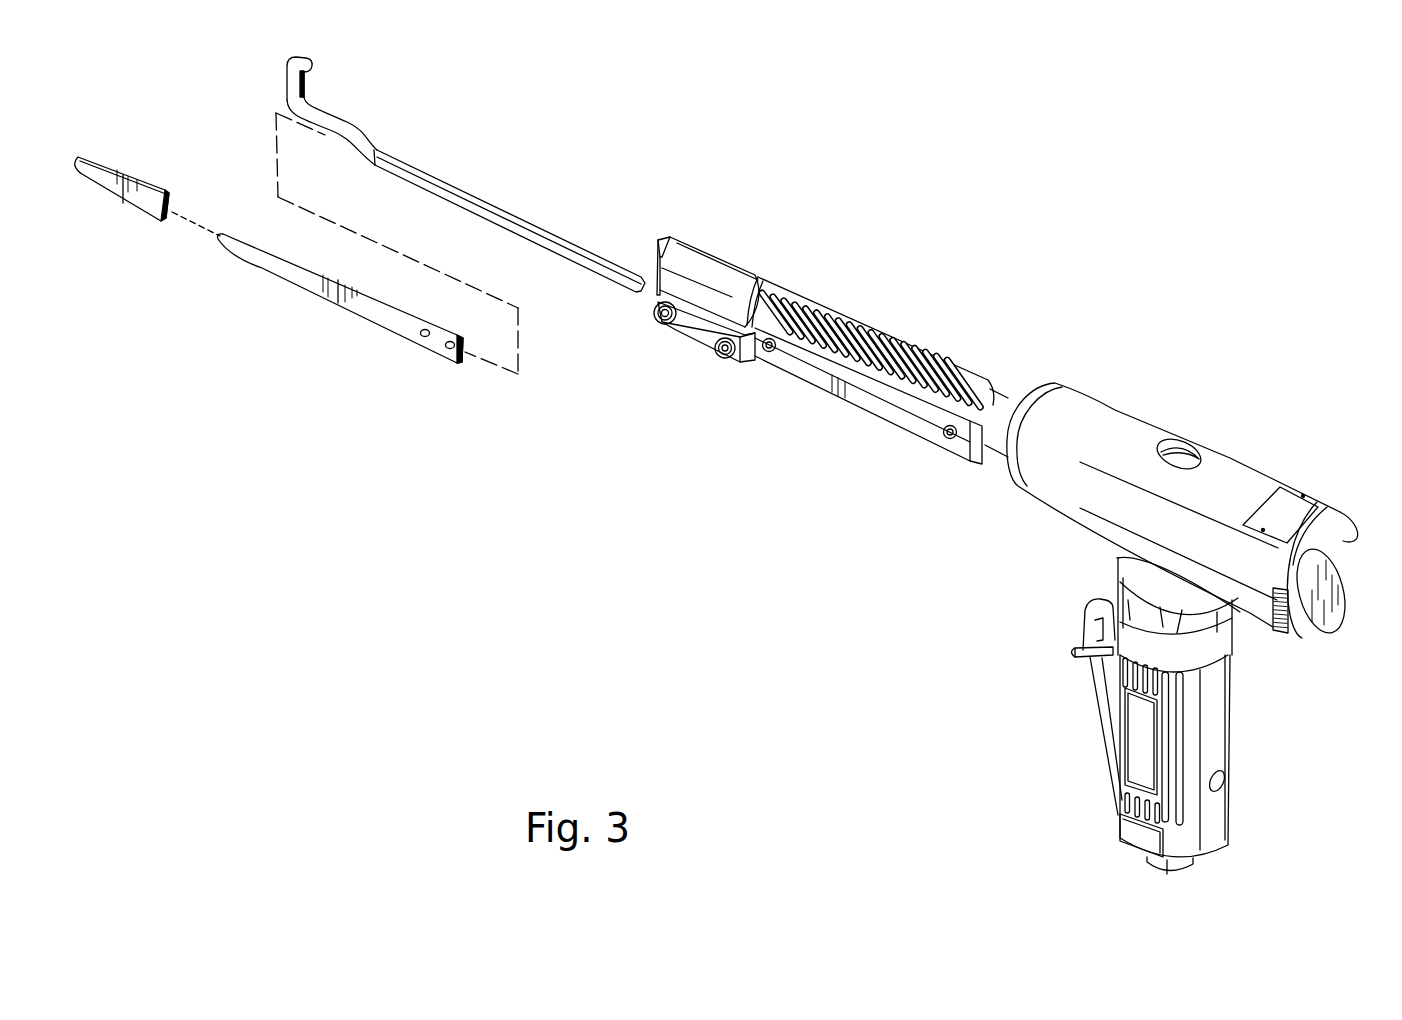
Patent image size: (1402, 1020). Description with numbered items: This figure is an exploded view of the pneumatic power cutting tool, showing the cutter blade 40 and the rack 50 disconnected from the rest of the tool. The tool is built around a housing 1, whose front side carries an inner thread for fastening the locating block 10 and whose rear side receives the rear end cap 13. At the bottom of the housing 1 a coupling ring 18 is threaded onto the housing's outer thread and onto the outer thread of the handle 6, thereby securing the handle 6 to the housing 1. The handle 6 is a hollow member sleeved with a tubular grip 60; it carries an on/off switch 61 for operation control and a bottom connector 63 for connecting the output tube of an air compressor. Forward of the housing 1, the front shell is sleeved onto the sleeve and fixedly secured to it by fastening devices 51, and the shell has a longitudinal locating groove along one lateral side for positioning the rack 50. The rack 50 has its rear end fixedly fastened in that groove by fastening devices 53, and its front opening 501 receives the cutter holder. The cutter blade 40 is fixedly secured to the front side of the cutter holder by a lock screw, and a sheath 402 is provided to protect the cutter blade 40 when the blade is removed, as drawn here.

The housing 1 is at (1044, 519).
The locating block 10 is at (992, 452).
The rear end cap 13 is at (1311, 632).
The coupling ring 18 is at (1233, 648).
The cutter blade 40 is at (362, 313).
The sheath 402 is at (115, 200).
The rack 50 is at (466, 173).
The front opening 501 is at (306, 83).
The fastening devices 51 is at (768, 353).
The fastening devices 53 is at (659, 324).
The handle 6 is at (1236, 780).
The tubular grip 60 is at (1218, 727).
The on/off switch 61 is at (1075, 653).
The bottom connector 63 is at (1148, 861).